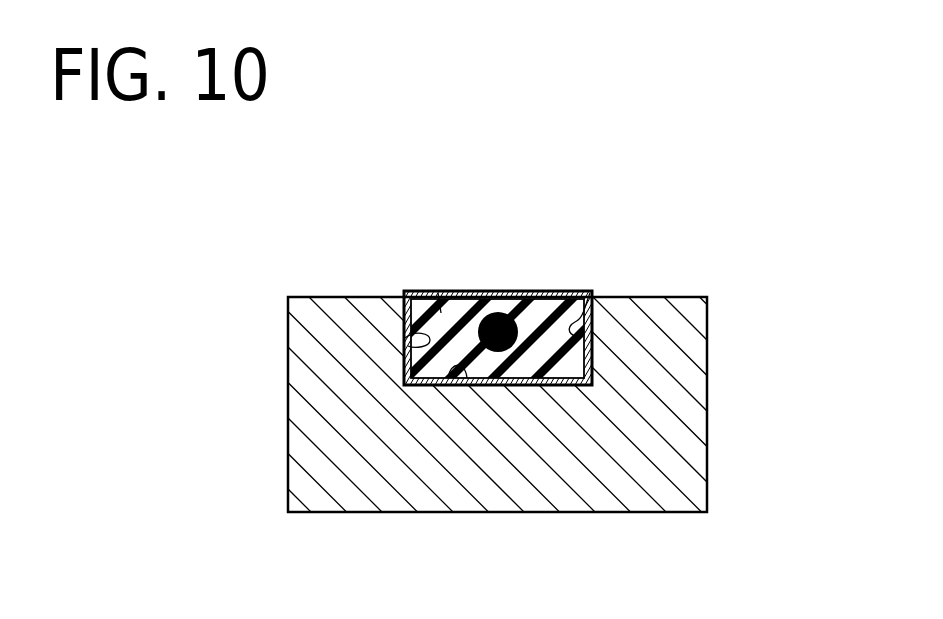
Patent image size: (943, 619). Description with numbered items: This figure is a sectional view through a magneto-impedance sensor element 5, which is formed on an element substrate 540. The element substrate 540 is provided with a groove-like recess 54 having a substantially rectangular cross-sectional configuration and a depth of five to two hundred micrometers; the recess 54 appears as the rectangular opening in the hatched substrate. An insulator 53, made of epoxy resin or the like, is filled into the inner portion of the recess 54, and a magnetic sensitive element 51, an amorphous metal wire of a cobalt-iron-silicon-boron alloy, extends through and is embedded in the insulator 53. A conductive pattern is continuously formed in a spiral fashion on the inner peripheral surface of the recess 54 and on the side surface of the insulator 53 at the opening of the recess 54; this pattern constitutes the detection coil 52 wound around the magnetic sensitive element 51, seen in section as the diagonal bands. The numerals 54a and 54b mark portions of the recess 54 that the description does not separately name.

The magneto-impedance sensor element 5 is at (622, 223).
The magnetic sensitive element 51 is at (492, 293).
The detection coil 52 is at (540, 293).
The insulator 53 is at (438, 293).
The recess 54 is at (553, 378).
The electrode pad 54a is at (405, 338).
The connection portion 54b is at (448, 378).
The element substrate 540 is at (673, 489).